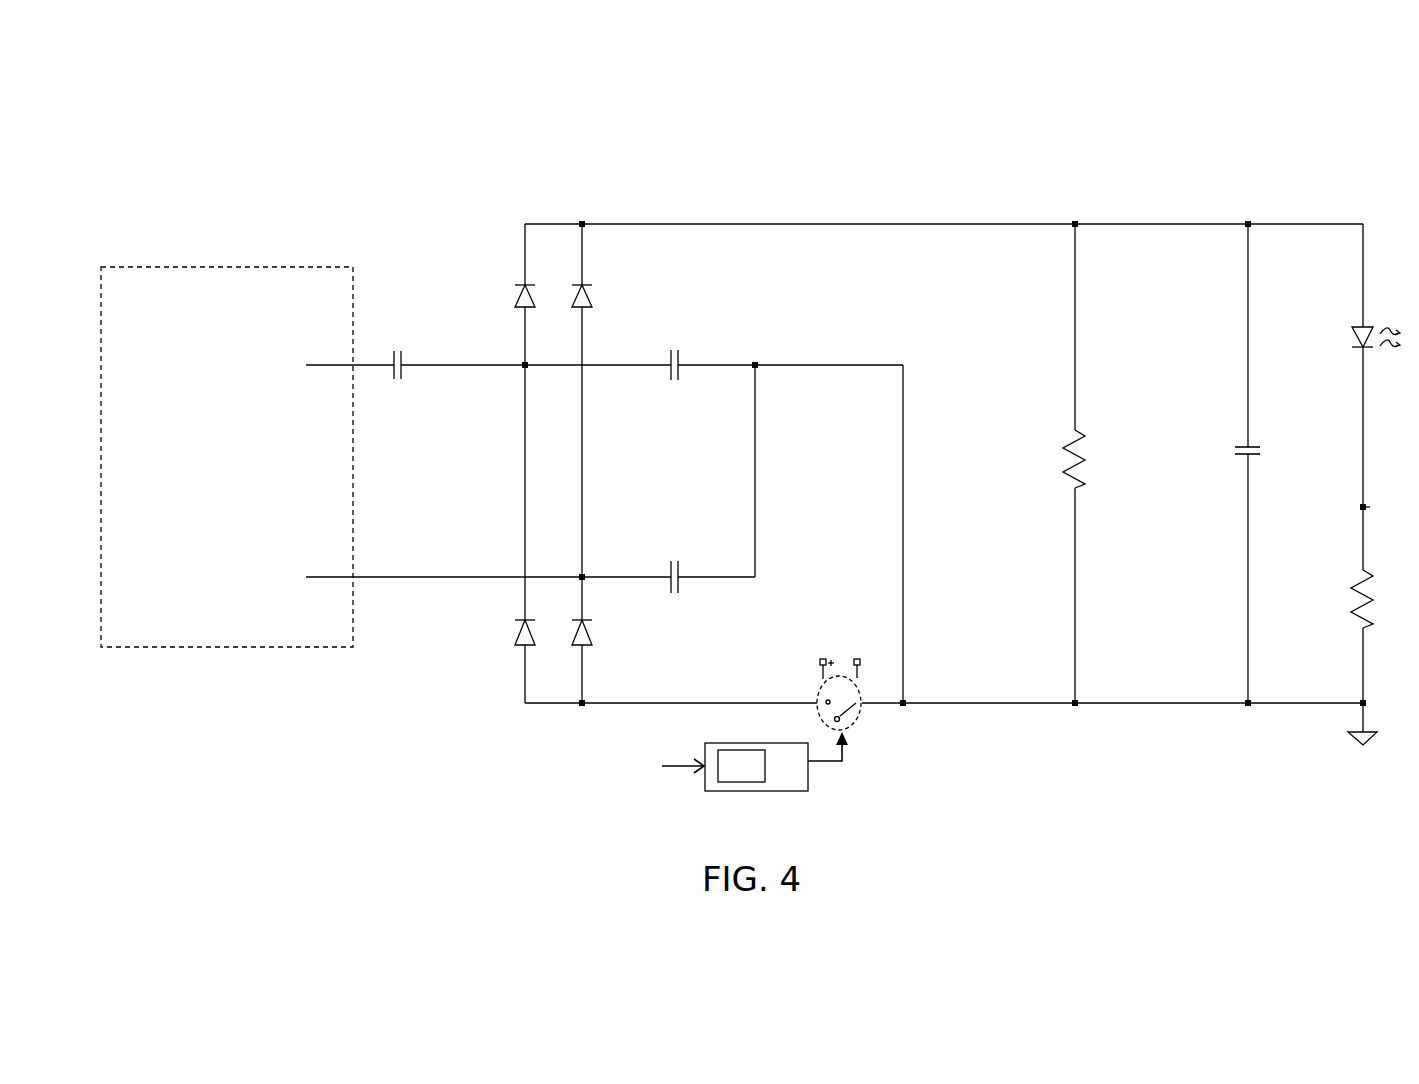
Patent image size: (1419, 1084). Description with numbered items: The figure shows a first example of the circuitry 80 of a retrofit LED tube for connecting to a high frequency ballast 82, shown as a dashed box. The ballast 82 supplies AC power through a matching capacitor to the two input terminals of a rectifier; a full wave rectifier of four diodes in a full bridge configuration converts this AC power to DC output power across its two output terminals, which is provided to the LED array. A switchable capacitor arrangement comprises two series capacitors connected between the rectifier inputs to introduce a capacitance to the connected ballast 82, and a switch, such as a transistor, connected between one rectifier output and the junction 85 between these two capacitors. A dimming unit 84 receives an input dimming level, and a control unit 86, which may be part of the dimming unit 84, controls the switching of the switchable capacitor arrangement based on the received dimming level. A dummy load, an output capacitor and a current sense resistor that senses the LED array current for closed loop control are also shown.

The circuitry 80 is at (1043, 200).
The HF ballast 82 is at (287, 267).
The dimming unit 84 is at (787, 791).
The junction 85 is at (755, 366).
The control unit 86 is at (745, 782).